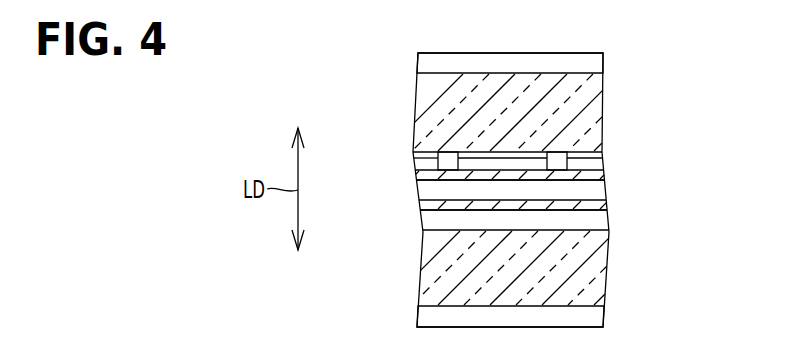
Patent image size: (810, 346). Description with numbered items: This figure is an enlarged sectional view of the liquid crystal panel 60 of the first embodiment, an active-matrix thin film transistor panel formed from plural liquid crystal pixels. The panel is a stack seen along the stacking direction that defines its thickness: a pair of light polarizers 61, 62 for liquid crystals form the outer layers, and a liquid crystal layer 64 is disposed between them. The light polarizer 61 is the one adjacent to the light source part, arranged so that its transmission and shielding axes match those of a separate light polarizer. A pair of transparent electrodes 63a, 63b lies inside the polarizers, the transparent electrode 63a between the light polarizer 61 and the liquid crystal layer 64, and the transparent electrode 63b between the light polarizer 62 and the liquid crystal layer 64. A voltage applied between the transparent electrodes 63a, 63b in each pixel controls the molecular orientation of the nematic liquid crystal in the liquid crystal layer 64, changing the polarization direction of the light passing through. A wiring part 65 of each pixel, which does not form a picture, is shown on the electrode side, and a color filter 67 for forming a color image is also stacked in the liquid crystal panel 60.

The liquid crystal panel 60 is at (686, 51).
The light polarizer for liquid crystals 61 is at (603, 322).
The light polarizer for liquid crystals 62 is at (603, 63).
The transparent electrode 63a is at (607, 222).
The transparent electrode 63b is at (603, 165).
The liquid crystal layer 64 is at (605, 192).
The wiring part 65 is at (448, 152).
The color filter 67 is at (414, 153).